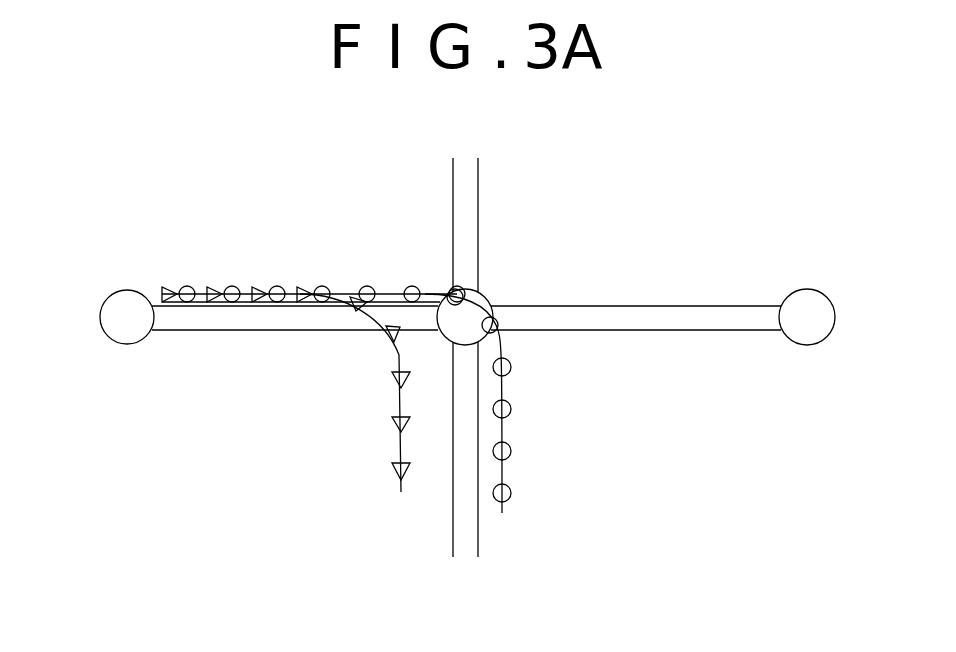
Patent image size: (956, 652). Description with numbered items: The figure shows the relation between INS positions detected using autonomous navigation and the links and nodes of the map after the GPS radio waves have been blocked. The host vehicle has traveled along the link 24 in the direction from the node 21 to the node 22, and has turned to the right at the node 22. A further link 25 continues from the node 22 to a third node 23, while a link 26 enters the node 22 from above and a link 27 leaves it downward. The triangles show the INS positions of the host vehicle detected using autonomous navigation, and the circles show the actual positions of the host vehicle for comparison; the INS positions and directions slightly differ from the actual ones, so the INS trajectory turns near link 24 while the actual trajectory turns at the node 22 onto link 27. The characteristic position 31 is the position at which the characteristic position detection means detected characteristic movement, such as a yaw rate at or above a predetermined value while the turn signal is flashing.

The node 21 is at (127, 297).
The node 22 is at (487, 295).
The third intersection node 23 is at (805, 295).
The link 24 is at (192, 332).
The road link 25 is at (669, 305).
The road link 26 is at (480, 180).
The road link 27 is at (478, 540).
The characteristic position 31 is at (395, 383).